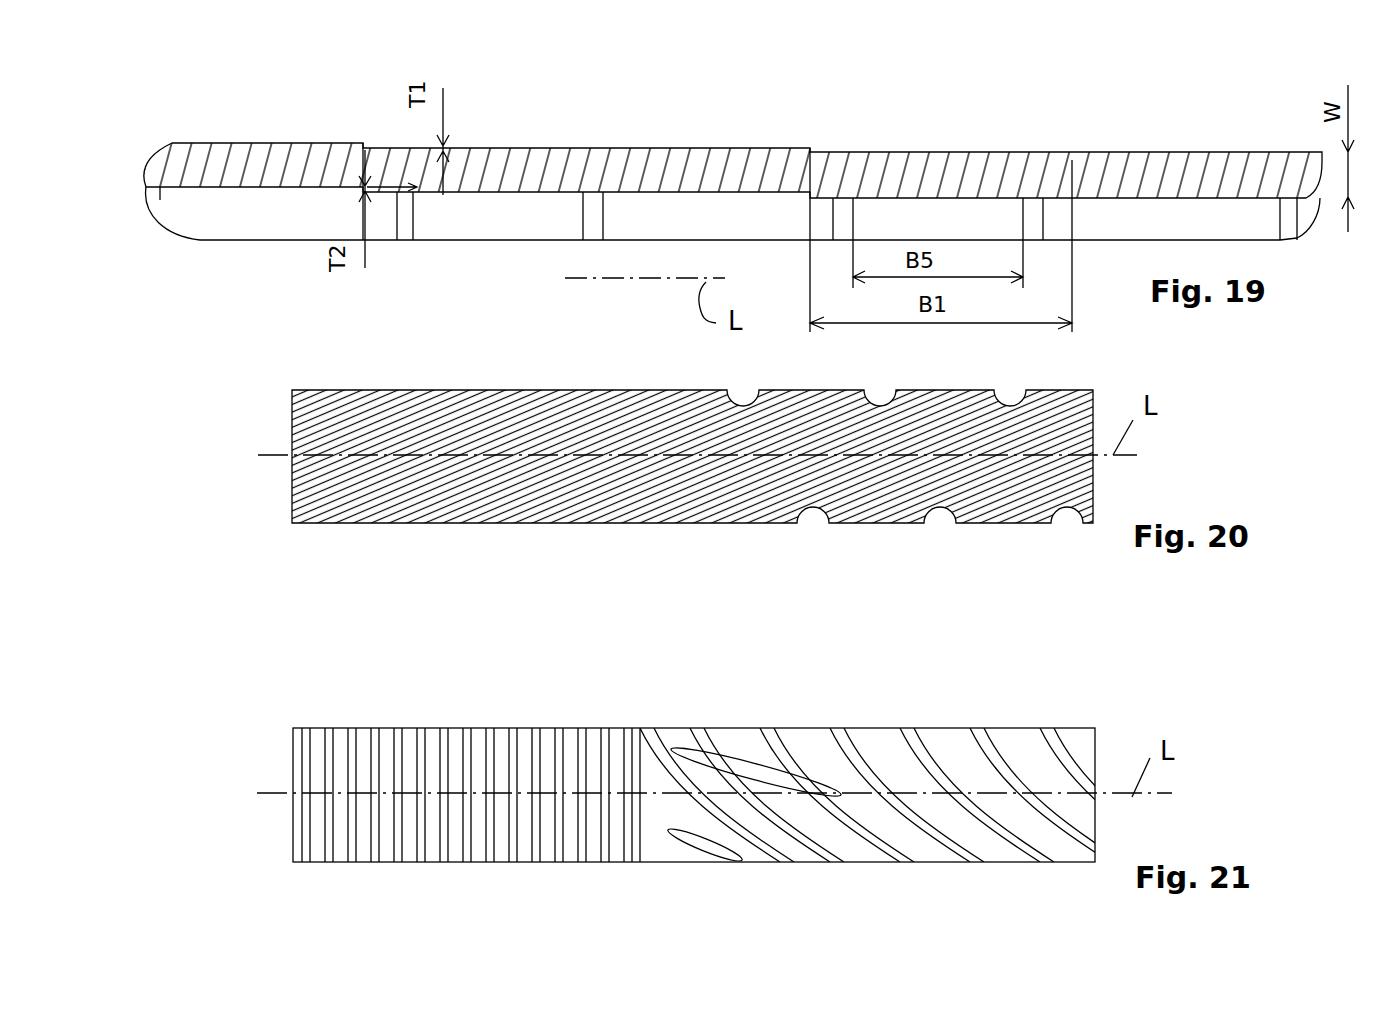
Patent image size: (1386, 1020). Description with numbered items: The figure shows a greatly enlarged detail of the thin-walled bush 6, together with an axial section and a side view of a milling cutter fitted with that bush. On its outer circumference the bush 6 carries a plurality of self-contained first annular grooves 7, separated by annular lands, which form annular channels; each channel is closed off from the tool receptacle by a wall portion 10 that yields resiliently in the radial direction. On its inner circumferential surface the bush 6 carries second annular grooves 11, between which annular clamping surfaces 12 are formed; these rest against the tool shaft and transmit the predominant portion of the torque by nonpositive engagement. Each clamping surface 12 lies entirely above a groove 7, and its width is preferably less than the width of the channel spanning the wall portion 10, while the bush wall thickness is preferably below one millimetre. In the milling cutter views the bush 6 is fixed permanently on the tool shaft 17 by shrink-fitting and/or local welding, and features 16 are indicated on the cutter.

In FIG. 19, the bush 6 is at (733, 191).
In FIG. 20, the bush 6 is at (692, 425).
In FIG. 21, the bush 6 is at (283, 767).
In FIG. 19, the first annular grooves 7 is at (528, 188).
In FIG. 21, the first annular grooves 7 is at (488, 750).
In FIG. 19, the wall portion 10 is at (580, 148).
In FIG. 19, the second annular grooves 11 is at (262, 190).
In FIG. 19, the clamping surfaces 12 is at (509, 192).
In FIG. 20, the notches 16 is at (856, 553).
In FIG. 21, the notches 16 is at (857, 705).
In FIG. 20, the tool shaft 17 is at (600, 402).